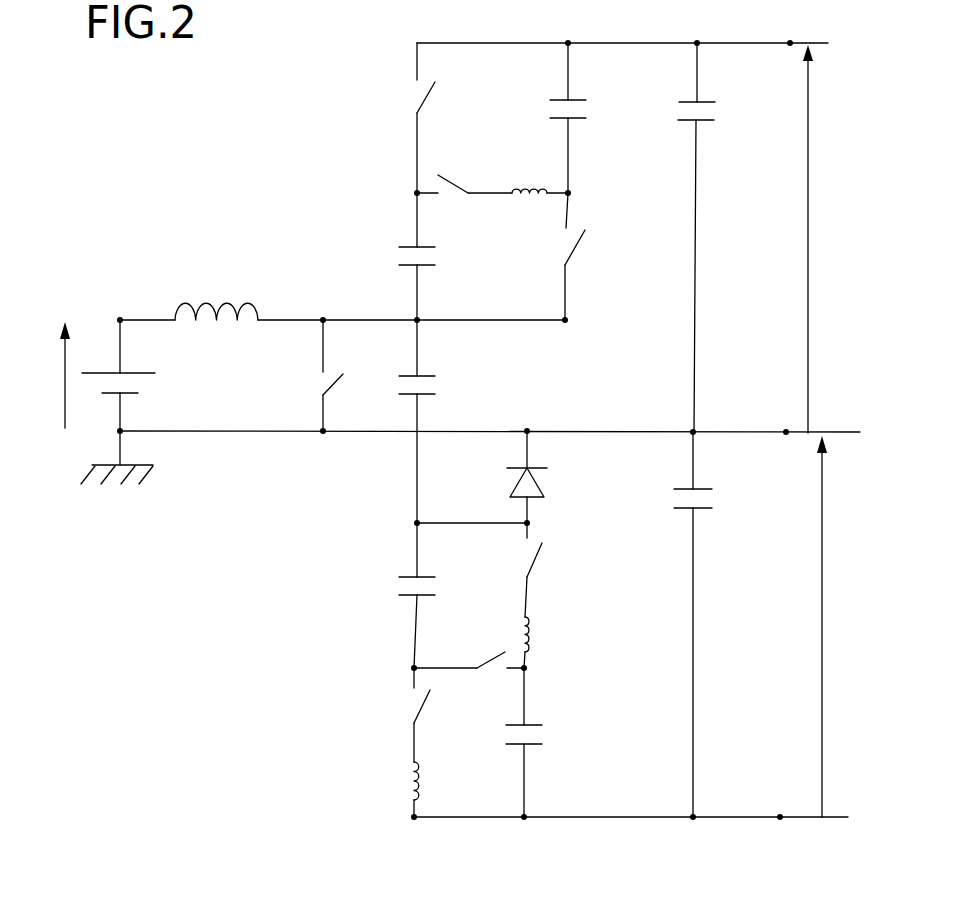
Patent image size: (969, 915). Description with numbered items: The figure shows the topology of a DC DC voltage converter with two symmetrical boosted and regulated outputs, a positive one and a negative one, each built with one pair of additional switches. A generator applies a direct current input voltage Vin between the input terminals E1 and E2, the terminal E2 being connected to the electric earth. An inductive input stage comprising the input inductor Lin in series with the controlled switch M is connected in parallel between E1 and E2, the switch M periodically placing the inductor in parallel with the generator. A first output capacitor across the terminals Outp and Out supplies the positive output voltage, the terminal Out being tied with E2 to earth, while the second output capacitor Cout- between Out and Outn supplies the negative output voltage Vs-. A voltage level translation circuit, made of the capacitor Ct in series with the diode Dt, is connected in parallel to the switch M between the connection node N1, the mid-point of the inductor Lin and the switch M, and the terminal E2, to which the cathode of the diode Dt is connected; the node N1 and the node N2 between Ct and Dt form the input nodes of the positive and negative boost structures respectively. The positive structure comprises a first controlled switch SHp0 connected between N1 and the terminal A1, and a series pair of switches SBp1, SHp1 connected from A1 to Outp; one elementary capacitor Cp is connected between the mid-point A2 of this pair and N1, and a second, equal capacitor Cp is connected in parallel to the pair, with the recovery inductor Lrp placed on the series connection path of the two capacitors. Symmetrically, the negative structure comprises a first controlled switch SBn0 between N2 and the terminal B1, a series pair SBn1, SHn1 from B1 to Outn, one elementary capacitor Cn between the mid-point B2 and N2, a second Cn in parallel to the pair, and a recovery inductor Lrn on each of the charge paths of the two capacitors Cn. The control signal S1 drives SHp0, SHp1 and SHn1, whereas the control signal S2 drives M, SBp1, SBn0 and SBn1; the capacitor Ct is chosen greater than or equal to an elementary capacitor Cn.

The positive output terminal Outp is at (654, 35).
The output terminal Out is at (502, 422).
The negative output terminal Outn is at (650, 808).
The negative output voltage Vs- is at (843, 626).
The input voltage Vin is at (85, 375).
The second output capacitor Cout- is at (734, 624).
The elementary capacitor Cp is at (498, 181).
The elementary capacitor Cn is at (472, 670).
The capacitor Ct is at (438, 421).
The input inductor Lin is at (216, 294).
The recovery inductor Lrp is at (540, 170).
The recovery inductor Lrn is at (467, 704).
The switch SHp1 is at (390, 118).
The first controlled switch SHp0 is at (611, 256).
The switch SBp1 is at (464, 170).
The switch SHn1 is at (469, 645).
The first controlled switch SBn0 is at (575, 570).
The switch SBn1 is at (450, 742).
The controlled switch M is at (342, 375).
The diode Dt is at (546, 477).
The control signal S1 is at (452, 100).
The control signal S2 is at (455, 207).
The terminal A1 is at (570, 192).
The mid-point A2 is at (417, 193).
The terminal B1 is at (530, 668).
The mid-point B2 is at (414, 668).
The connection node N1 is at (323, 318).
The node N2 is at (525, 521).
The input terminal E1 is at (137, 304).
The input terminal E2 is at (117, 452).